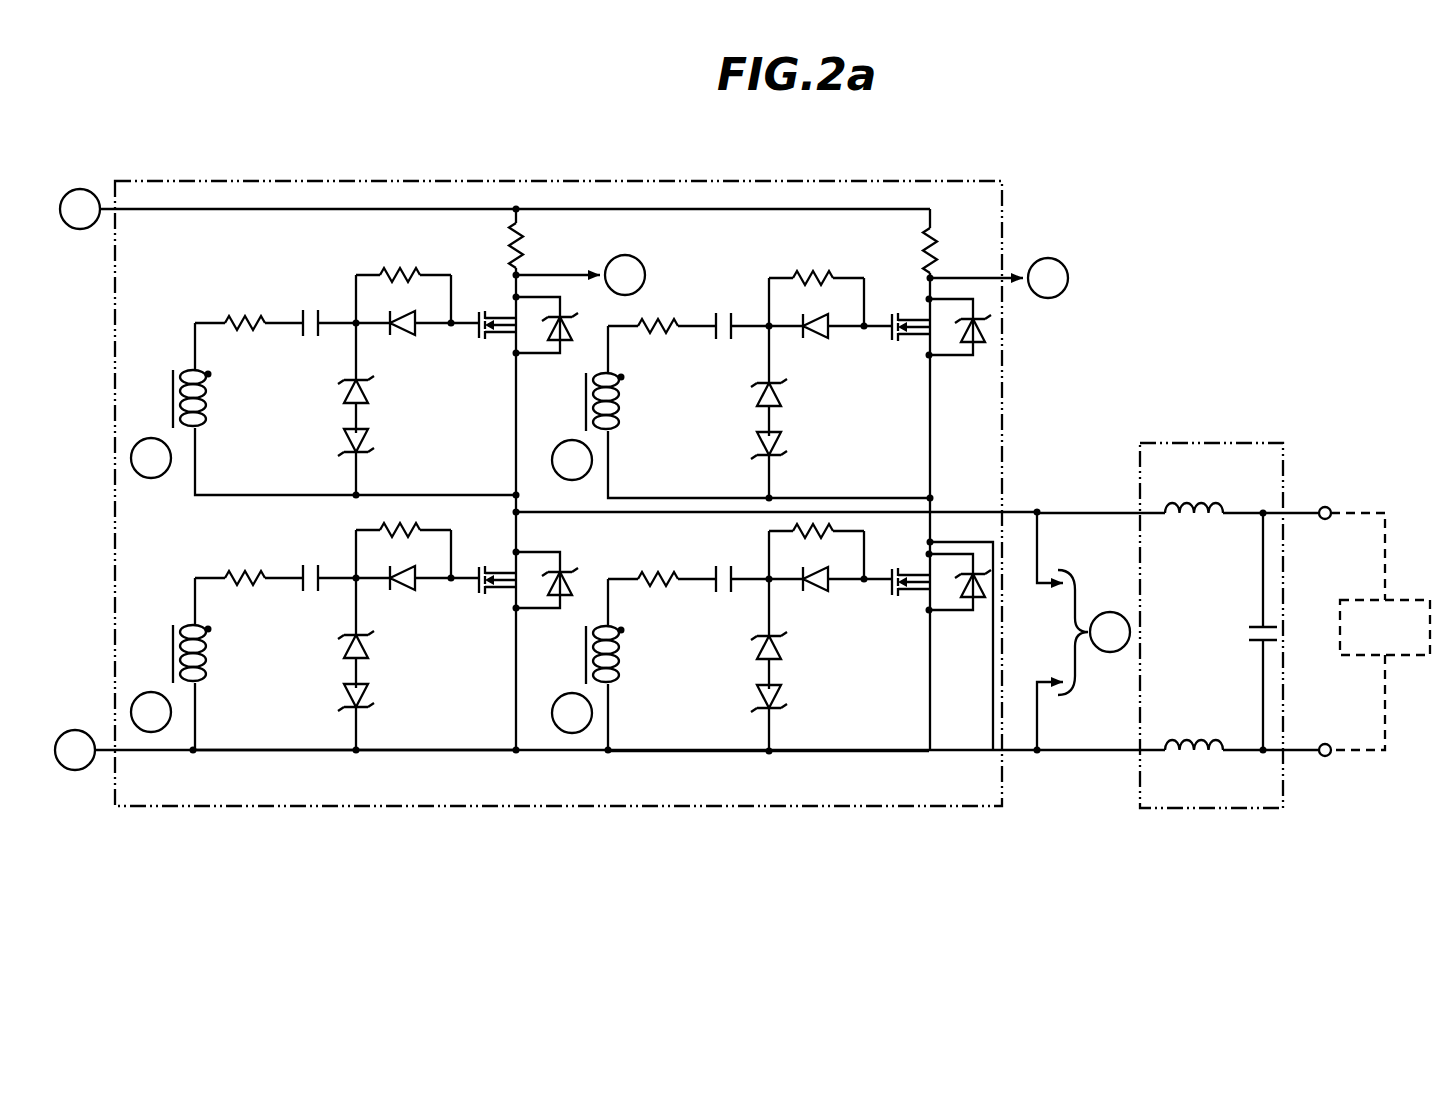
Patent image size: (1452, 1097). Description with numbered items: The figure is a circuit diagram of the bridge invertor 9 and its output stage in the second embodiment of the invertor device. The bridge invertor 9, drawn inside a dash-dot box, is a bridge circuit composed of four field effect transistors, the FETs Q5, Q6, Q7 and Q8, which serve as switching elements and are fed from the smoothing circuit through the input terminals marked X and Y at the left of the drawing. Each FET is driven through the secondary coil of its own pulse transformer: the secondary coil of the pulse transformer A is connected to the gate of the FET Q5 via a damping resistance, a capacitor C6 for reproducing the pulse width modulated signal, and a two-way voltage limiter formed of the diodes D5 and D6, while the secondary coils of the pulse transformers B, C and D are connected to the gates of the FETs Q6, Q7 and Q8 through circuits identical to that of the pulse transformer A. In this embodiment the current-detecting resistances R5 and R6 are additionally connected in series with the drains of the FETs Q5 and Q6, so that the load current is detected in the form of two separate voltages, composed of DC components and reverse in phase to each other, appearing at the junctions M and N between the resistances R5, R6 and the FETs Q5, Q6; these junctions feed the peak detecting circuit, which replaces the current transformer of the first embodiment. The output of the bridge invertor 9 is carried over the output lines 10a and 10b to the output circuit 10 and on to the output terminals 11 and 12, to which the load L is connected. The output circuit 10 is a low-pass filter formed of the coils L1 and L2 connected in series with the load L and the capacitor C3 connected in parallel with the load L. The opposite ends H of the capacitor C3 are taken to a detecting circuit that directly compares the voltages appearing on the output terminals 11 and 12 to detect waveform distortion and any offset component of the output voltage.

The bridge invertor 9 is at (935, 808).
The output circuit 10 is at (1172, 808).
The output line 10a is at (1067, 512).
The output line 10b is at (1097, 751).
The output terminal 11 is at (1328, 506).
The output terminal 12 is at (1331, 757).
The load L is at (1378, 655).
The coil L1 is at (1194, 541).
The coil L2 is at (1194, 728).
The capacitor C3 is at (1240, 631).
The current-detecting resistance R5 is at (536, 245).
The current-detecting resistance R6 is at (950, 250).
The capacitor C6 is at (312, 308).
The diode D5 is at (377, 391).
The diode D6 is at (377, 444).
The FET Q5 is at (521, 336).
The FET Q6 is at (933, 338).
The FET Q7 is at (932, 594).
The FET Q8 is at (520, 590).
The pulse transformer A is at (323, 383).
The pulse transformer B is at (740, 386).
The pulse transformer C is at (740, 639).
The pulse transformer D is at (323, 638).
The DC input terminal X is at (80, 209).
The DC input terminal Y is at (75, 750).
The junction M is at (579, 275).
The junction N is at (998, 278).
The opposite ends of capacitor H is at (1083, 631).